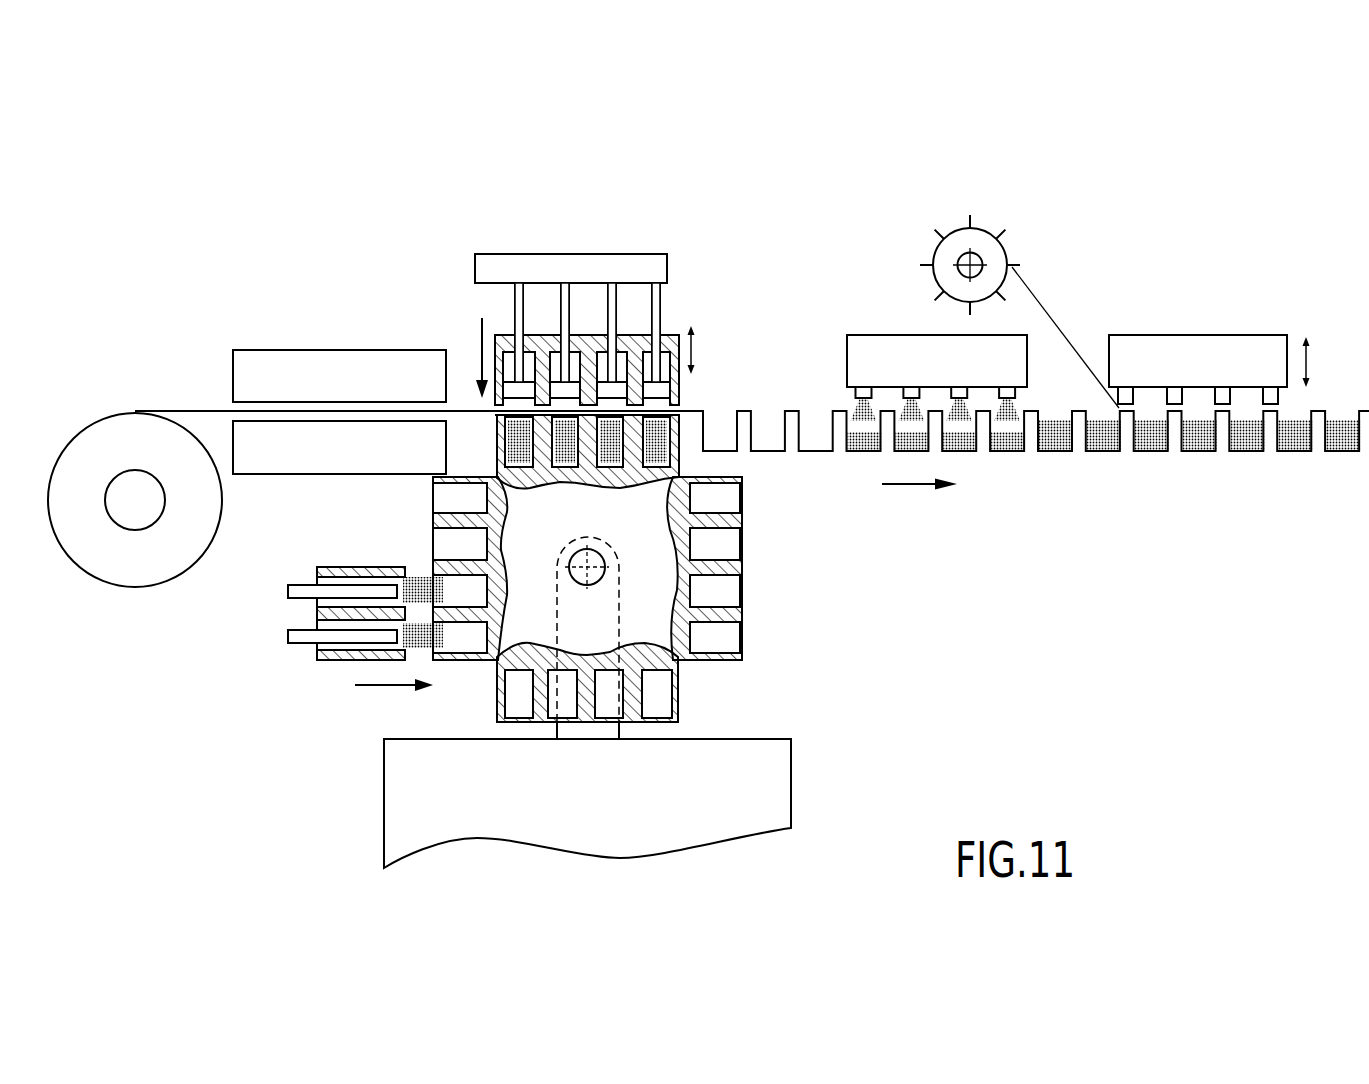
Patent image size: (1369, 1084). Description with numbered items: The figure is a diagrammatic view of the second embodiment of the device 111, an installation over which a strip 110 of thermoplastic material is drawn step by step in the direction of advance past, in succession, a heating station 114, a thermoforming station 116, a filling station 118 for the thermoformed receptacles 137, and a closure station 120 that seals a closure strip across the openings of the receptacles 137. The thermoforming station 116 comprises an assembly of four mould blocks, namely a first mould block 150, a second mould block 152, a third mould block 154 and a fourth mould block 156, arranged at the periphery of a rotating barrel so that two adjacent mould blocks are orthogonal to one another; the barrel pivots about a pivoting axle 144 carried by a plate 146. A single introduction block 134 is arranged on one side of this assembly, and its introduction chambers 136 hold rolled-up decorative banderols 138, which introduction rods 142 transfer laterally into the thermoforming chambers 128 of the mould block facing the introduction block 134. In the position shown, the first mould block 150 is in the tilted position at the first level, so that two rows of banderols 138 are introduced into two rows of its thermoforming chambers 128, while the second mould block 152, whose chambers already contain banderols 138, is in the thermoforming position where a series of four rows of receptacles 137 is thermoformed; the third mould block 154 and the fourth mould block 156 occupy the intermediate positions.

The strip 110 is at (192, 410).
The device 111 is at (573, 268).
The heating station 114 is at (300, 346).
The thermoforming station 116 is at (622, 253).
The filling station 118 is at (905, 333).
The closure station 120 is at (1185, 329).
The thermoforming chambers 128 is at (655, 417).
The introduction block 134 is at (340, 637).
The introduction chambers 136 is at (345, 580).
The receptacles 137 is at (812, 450).
The decorative banderols 138 is at (512, 441).
The introduction rods 142 is at (305, 640).
The pivoting axle 144 is at (589, 553).
The plate 146 is at (397, 808).
The first mould block 150 is at (492, 652).
The second mould block 152 is at (680, 462).
The third mould block 154 is at (683, 652).
The fourth mould block 156 is at (543, 655).